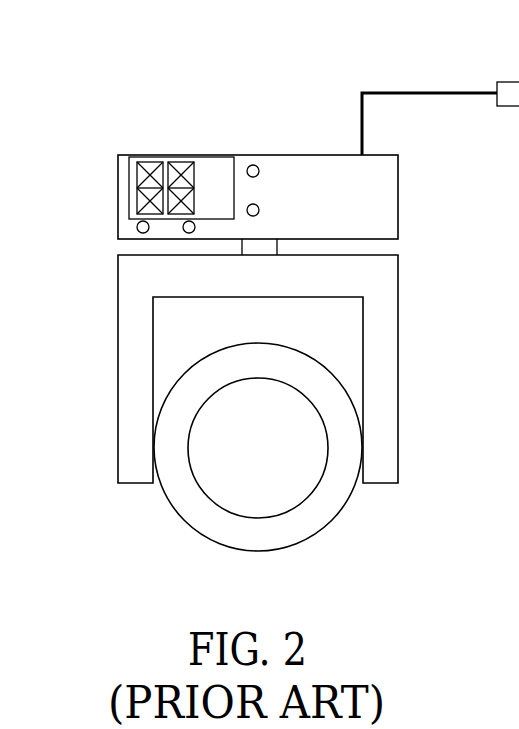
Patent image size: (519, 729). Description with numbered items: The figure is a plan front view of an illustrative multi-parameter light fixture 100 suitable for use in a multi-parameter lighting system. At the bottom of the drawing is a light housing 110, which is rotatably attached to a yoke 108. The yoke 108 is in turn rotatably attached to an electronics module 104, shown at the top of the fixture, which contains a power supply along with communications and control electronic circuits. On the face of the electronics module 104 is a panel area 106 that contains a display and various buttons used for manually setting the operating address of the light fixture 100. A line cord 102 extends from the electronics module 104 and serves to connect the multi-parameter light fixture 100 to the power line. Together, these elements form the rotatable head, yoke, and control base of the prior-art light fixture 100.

The light fixture 100 is at (126, 124).
The line cord 102 is at (413, 88).
The electronics module 104 is at (117, 197).
The panel area 106 is at (270, 192).
The yoke 108 is at (117, 378).
The light housing 110 is at (197, 535).